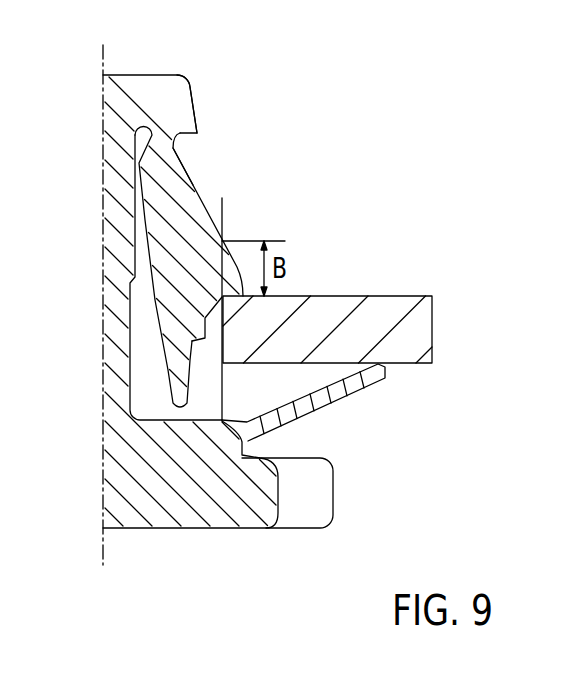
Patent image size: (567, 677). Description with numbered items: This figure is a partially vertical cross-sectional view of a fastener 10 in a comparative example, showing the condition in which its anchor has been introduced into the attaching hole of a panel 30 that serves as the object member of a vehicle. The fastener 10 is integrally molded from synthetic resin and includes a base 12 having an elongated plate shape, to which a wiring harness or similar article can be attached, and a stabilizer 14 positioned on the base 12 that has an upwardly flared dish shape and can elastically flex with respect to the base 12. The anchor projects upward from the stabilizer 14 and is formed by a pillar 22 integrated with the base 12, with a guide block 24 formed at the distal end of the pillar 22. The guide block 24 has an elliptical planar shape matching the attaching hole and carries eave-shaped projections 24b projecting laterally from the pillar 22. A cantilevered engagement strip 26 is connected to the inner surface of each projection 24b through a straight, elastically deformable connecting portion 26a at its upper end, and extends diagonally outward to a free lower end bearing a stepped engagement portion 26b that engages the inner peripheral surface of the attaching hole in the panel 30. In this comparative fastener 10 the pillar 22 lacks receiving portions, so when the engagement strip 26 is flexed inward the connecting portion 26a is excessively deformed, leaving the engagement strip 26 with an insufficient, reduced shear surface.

The fastener 10 is at (276, 102).
The base 12 is at (223, 497).
The stabilizer 14 is at (343, 388).
The pillar 22 is at (117, 253).
The guide block 24 is at (147, 75).
The eave-shaped projection 24b is at (172, 97).
The engagement strip 26 is at (193, 230).
The connecting portion 26a is at (168, 148).
The engagement portion 26b is at (203, 341).
The panel 30 is at (382, 312).